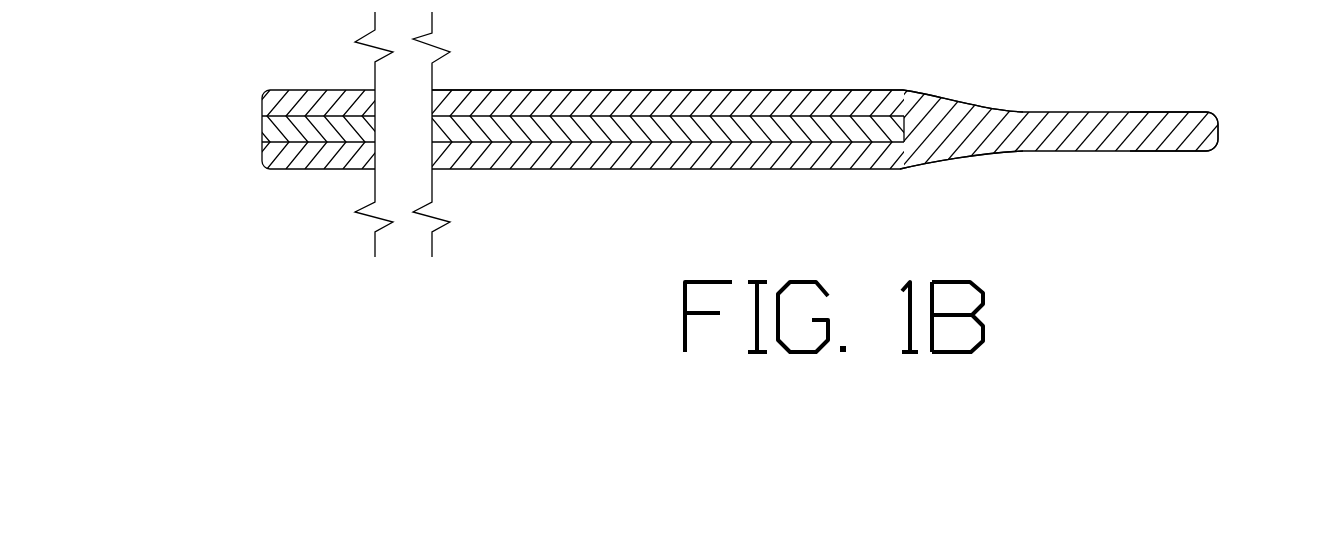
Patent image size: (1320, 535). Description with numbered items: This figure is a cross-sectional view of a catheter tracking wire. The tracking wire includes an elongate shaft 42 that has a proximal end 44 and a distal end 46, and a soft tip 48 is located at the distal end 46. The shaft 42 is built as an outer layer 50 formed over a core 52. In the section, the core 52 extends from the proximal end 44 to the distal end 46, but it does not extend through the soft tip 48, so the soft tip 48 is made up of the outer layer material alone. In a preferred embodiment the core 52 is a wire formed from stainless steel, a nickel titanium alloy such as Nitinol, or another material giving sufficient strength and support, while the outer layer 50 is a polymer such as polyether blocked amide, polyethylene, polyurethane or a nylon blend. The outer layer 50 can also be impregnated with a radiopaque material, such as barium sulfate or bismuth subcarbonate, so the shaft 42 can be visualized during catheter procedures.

The elongate shaft 42 is at (861, 102).
The proximal end 44 is at (286, 104).
The distal end 46 is at (970, 153).
The soft tip 48 is at (1174, 155).
The outer layer 50 is at (668, 74).
The core 52 is at (668, 163).